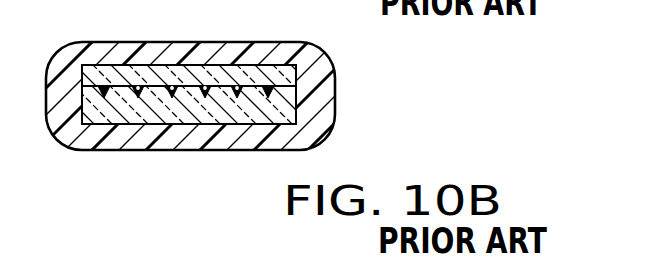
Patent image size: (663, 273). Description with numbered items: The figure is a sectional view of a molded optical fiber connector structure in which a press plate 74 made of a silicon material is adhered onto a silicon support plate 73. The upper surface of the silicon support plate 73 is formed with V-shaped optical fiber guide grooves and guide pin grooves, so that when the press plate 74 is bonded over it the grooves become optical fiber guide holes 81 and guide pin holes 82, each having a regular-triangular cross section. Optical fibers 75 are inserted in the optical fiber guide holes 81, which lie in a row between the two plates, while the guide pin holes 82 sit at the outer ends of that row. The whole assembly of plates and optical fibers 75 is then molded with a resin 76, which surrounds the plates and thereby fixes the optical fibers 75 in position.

The silicon support plate 73 is at (180, 113).
The press plate 74 is at (250, 72).
The optical fibers 75 is at (202, 85).
The resin 76 is at (323, 107).
The optical fiber guide holes 81 is at (137, 92).
The guide pin holes 82 is at (103, 95).